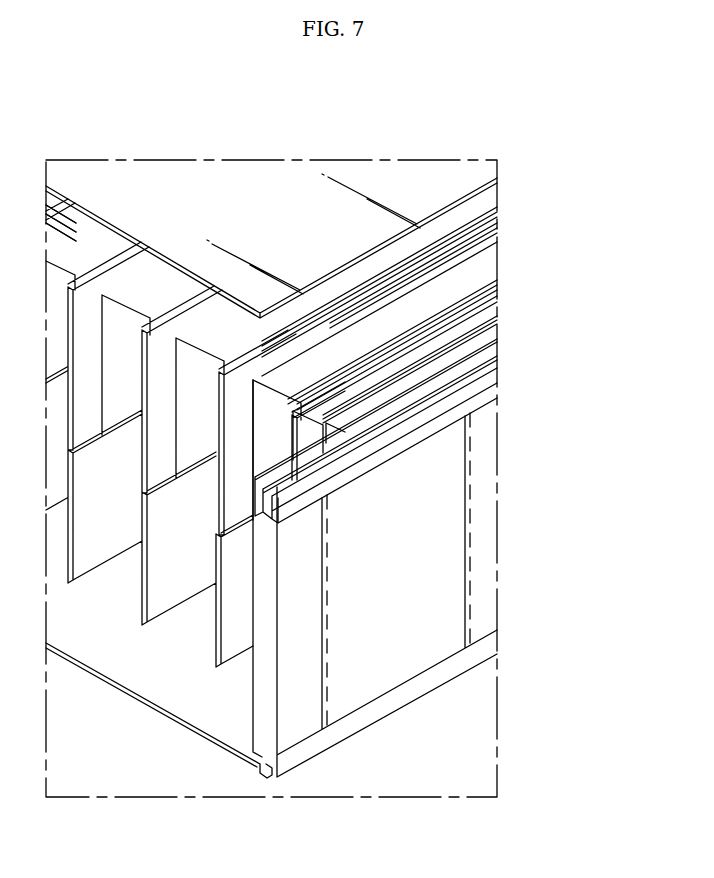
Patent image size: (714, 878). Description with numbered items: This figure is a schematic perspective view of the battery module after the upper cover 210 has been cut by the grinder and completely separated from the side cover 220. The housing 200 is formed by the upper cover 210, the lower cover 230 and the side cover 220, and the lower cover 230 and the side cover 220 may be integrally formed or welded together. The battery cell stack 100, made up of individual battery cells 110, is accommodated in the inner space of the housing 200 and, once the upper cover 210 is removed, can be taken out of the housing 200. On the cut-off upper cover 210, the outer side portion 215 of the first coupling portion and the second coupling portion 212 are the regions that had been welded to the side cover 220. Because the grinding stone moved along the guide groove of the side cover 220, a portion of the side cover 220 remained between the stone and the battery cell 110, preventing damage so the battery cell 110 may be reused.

The battery cell stack 100 is at (556, 264).
The battery cell 110 is at (473, 281).
The housing 200 is at (190, 137).
The upper cover 210 is at (303, 183).
The second coupling portion 212 is at (466, 405).
The outer side portion 215 is at (490, 363).
The side cover 220 is at (470, 532).
The lower cover 230 is at (158, 686).